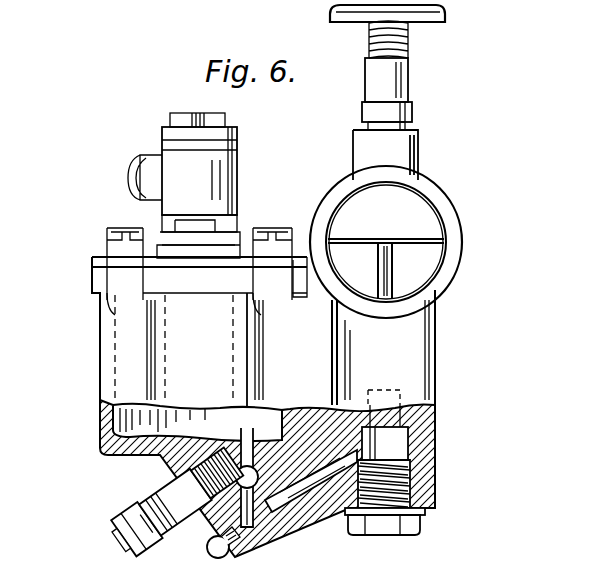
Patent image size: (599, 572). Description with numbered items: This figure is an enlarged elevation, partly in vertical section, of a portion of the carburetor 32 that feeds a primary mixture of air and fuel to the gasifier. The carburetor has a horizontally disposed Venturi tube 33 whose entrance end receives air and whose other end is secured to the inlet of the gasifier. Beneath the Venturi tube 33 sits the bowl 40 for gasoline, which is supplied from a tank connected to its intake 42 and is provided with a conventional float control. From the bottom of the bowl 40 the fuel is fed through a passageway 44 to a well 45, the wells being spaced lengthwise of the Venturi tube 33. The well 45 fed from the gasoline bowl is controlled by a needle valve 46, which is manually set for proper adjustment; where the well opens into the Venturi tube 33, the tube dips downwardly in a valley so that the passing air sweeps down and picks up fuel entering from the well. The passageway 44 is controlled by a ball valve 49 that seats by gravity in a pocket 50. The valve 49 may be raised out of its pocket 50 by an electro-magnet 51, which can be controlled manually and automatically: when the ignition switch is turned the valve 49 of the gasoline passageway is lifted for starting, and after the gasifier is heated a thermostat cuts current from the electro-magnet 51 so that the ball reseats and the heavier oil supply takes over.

The carburetor 32 is at (90, 349).
The Venturi tube 33 is at (340, 195).
The bowl for gasoline 40 is at (105, 383).
The intake 42 is at (143, 167).
The passageway 44 is at (300, 500).
The well 45 is at (395, 447).
The needle valve 46 is at (400, 268).
The valve 49 is at (250, 445).
The pocket 50 is at (262, 490).
The electro-magnet 51 is at (150, 505).